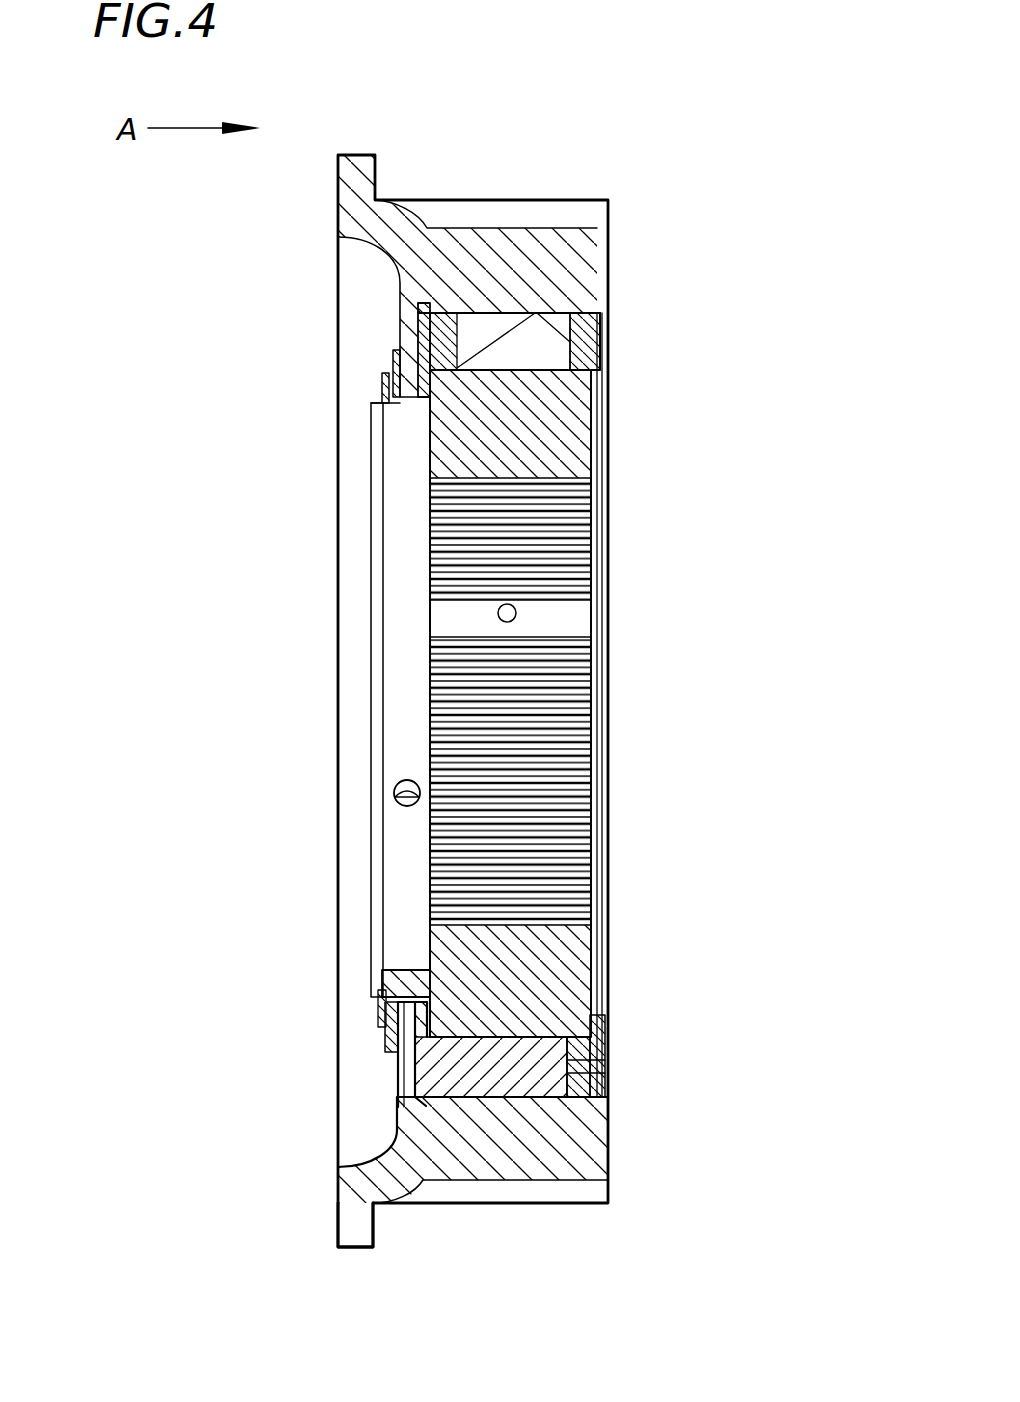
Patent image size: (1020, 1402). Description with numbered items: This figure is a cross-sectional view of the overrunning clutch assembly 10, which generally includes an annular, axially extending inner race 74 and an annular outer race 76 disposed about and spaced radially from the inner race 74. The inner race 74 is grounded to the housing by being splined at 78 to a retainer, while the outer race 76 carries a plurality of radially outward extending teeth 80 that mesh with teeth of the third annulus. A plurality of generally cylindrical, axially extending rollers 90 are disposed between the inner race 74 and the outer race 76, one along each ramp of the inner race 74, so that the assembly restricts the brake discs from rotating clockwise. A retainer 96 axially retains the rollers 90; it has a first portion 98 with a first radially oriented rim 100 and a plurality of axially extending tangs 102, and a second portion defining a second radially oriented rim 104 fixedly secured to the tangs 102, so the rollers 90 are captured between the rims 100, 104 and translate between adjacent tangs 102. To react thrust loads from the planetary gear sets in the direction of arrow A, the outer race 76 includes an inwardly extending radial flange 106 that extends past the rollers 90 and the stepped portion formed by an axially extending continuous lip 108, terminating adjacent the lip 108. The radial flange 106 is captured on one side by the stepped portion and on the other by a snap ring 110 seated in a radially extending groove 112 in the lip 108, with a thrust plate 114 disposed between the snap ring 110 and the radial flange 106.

The overrunning clutch assembly 10 is at (767, 132).
The inner race 74 is at (612, 938).
The outer race 76 is at (628, 242).
The spline 78 is at (553, 724).
The radially outward extending teeth 80 is at (372, 1246).
The rollers 90 is at (533, 330).
The retainer 96 is at (471, 1108).
The first portion 98 is at (555, 1115).
The first radially oriented rim 100 is at (388, 1027).
The axially extending tangs 102 is at (552, 1036).
The second radially oriented rim 104 is at (590, 345).
The inwardly extending radial flange 106 is at (405, 1082).
The axially extending continuous lip 108 is at (405, 977).
The snap ring 110 is at (383, 380).
The radially extending groove 112 is at (372, 403).
The thrust plate 114 is at (398, 345).